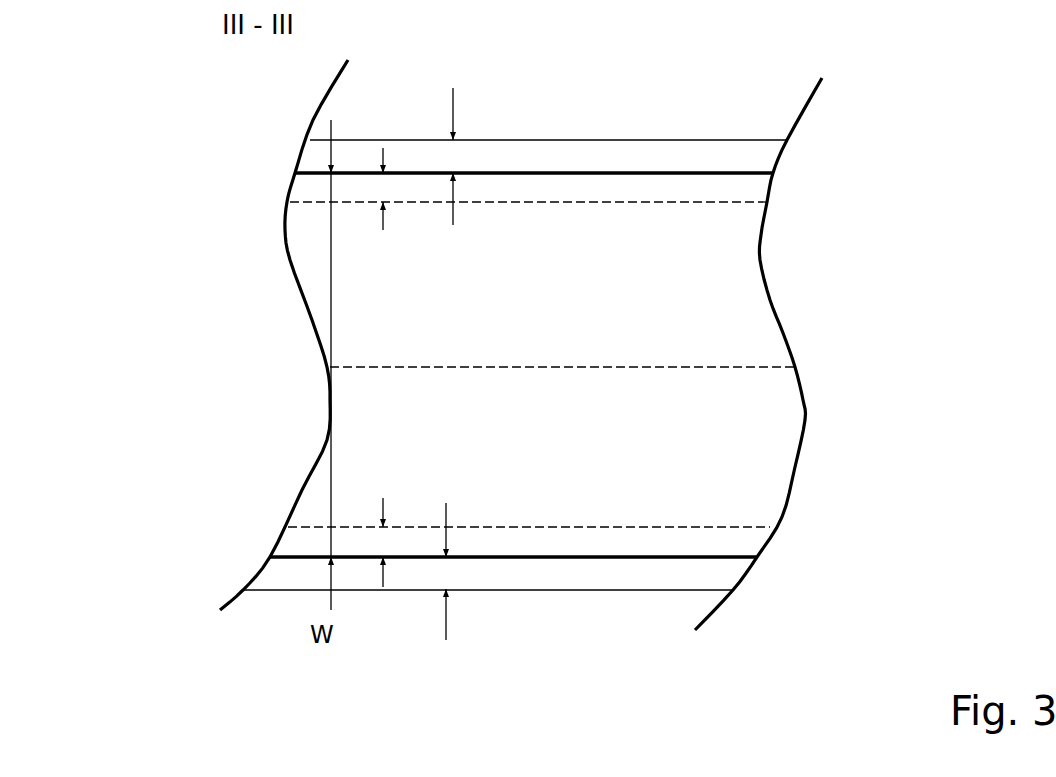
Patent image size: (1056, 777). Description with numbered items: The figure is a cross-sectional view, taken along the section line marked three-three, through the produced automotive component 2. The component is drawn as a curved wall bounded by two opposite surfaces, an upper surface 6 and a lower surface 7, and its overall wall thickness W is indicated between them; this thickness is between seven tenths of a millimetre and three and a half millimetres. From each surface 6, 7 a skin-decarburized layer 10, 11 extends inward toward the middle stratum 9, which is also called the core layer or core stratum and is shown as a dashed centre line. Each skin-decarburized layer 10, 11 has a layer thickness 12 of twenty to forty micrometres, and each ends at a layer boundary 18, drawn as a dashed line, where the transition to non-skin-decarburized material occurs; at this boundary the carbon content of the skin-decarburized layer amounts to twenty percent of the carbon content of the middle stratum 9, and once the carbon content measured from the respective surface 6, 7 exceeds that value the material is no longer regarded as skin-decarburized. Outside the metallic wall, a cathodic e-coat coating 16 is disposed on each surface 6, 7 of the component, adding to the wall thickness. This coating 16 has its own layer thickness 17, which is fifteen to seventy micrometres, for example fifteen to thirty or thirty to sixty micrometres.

The automotive component 2 is at (225, 233).
The surface 6 is at (525, 172).
The surface 7 is at (495, 558).
The middle stratum 9 is at (695, 365).
The skin-decarburized layer 10 is at (677, 187).
The skin-decarburized layer 11 is at (617, 542).
The layer thickness 12 is at (389, 369).
The cathodic e-coat coating 16 is at (632, 152).
The layer thickness 17 is at (455, 100).
The layer boundary 18 is at (703, 203).